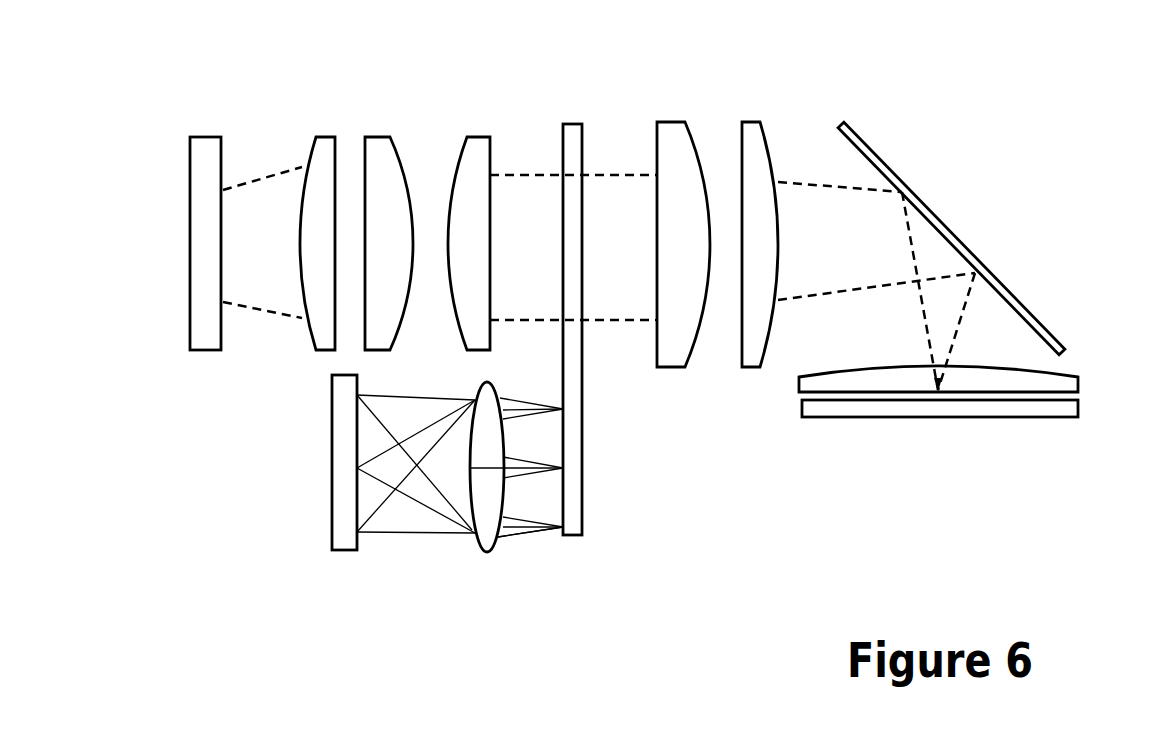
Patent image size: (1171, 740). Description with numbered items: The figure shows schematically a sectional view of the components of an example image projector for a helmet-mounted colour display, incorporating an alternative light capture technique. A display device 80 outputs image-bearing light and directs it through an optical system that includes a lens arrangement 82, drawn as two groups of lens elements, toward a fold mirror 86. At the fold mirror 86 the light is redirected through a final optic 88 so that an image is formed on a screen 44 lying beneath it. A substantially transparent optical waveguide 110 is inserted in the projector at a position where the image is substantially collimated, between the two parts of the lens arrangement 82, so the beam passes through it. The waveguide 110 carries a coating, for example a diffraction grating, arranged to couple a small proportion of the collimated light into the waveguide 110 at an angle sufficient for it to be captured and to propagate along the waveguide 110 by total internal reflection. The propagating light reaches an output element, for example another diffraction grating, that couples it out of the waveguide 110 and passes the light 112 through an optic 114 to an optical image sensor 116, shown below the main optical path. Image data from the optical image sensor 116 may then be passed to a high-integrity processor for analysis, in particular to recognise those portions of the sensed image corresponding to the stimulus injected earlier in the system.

The display device 80 is at (190, 232).
The lens arrangement 82 is at (479, 90).
The fold mirror 86 is at (877, 151).
The final optic 88 is at (1078, 382).
The screen 44 is at (800, 410).
The optical waveguide 110 is at (583, 470).
The light 112 is at (530, 536).
The optic 114 is at (490, 553).
The optical image sensor 116 is at (332, 448).